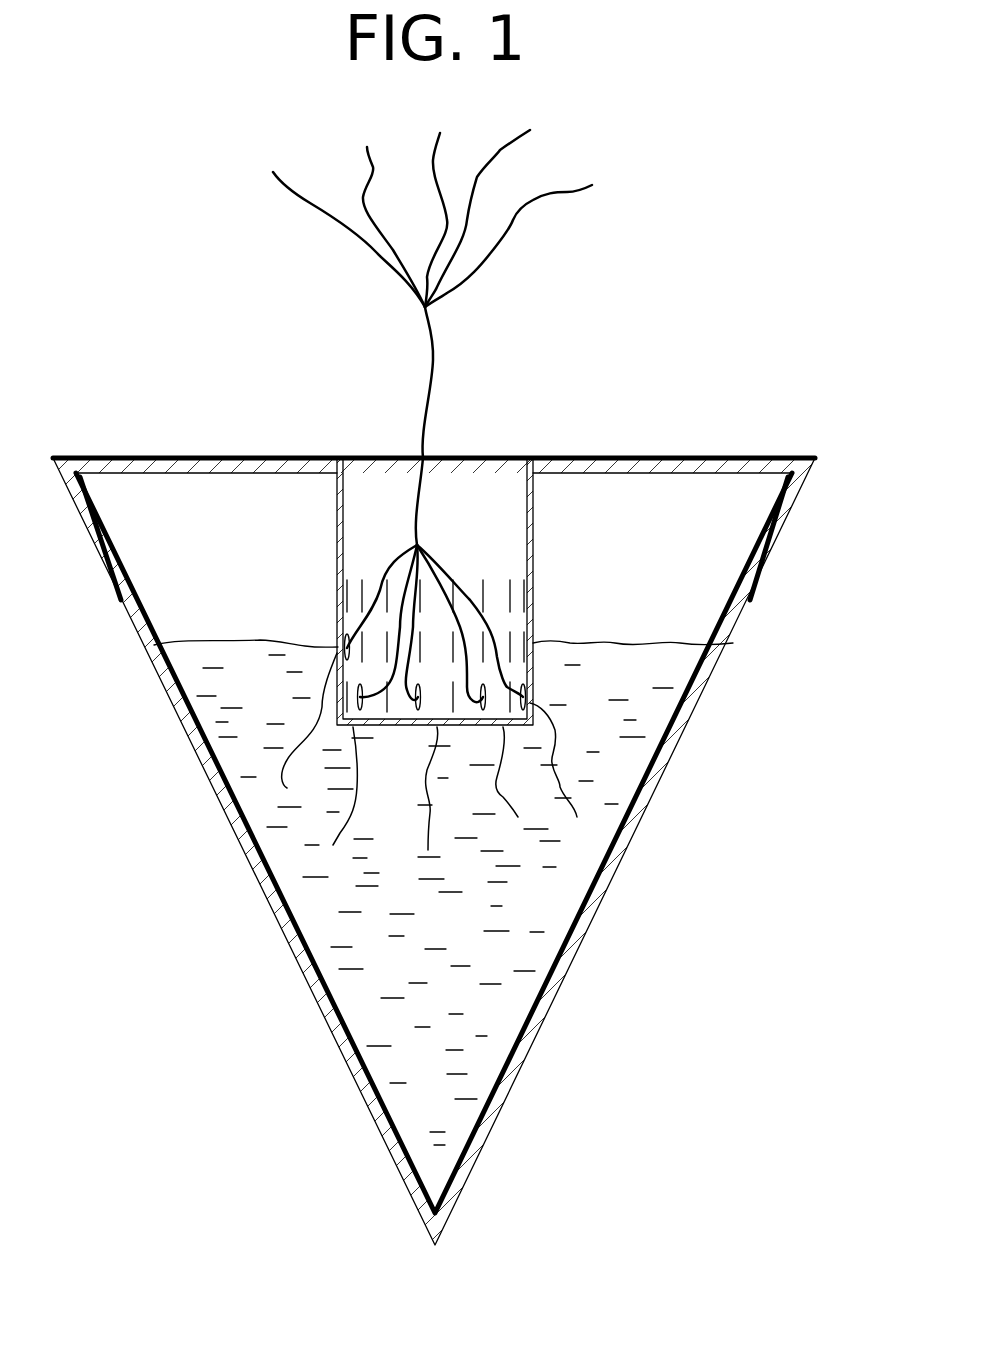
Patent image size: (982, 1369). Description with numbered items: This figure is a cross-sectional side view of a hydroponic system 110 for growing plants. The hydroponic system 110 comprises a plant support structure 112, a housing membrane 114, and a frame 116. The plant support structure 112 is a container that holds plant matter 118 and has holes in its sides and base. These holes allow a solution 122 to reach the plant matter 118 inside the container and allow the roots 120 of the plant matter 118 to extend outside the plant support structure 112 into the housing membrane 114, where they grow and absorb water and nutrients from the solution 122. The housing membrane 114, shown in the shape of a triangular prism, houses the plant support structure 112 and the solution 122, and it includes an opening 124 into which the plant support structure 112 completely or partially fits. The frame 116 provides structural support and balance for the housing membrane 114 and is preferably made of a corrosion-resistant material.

The hydroponic system 110 is at (178, 292).
The plant support structure 112 is at (515, 527).
The housing membrane 114 is at (716, 456).
The frame 116 is at (709, 680).
The plant matter 118 is at (435, 358).
The roots 120 is at (347, 832).
The solution 122 is at (540, 931).
The opening 124 is at (393, 498).